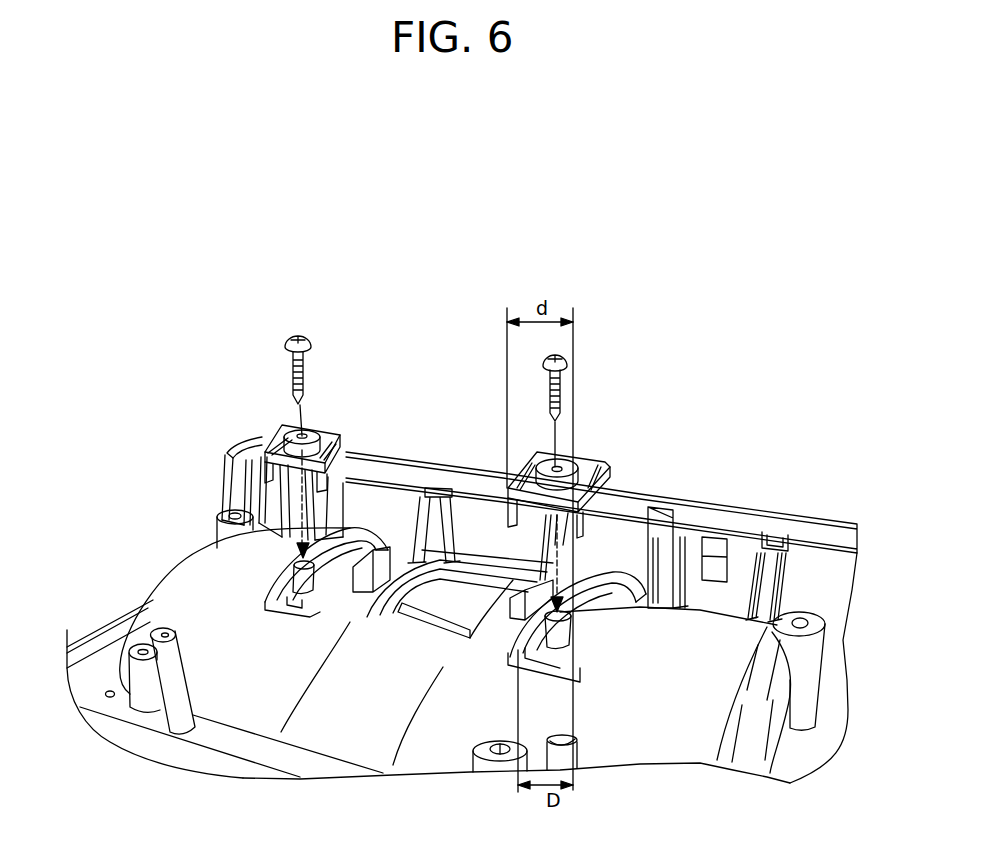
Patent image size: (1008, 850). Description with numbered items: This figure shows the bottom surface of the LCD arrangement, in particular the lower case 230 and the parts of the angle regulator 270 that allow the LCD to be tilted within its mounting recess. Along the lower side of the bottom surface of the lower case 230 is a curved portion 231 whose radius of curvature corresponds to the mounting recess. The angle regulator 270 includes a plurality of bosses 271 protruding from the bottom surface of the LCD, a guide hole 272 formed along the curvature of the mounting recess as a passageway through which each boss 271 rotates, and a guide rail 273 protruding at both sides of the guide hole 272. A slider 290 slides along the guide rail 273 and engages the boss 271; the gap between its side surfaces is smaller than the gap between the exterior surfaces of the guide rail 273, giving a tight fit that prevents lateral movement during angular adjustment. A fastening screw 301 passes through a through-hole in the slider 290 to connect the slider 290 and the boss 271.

The lower case 230 is at (820, 532).
The curved portion 231 is at (693, 627).
The angle regulator 270 is at (108, 417).
The boss 271 is at (230, 517).
The guide hole 272 is at (630, 535).
The guide rail 273 is at (302, 566).
The slider 290 is at (232, 452).
The fastening screw 301 is at (308, 360).